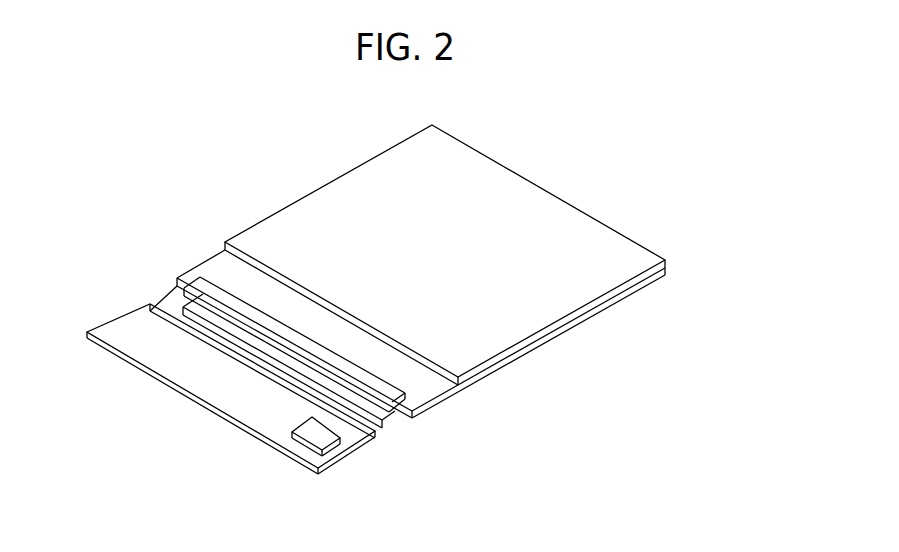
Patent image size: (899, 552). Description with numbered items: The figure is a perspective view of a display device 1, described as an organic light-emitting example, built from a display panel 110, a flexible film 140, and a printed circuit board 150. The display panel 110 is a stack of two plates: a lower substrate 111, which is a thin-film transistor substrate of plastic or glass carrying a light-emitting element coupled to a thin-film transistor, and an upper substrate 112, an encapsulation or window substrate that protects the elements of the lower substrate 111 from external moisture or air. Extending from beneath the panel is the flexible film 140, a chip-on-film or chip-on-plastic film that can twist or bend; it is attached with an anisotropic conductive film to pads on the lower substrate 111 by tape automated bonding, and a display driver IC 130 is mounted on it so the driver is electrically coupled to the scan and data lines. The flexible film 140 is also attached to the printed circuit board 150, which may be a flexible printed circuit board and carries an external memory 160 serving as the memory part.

The display device 1 is at (376, 296).
The display panel 110 is at (445, 275).
The lower substrate 111 is at (663, 365).
The upper substrate 112 is at (592, 308).
The display driver IC 130 is at (390, 406).
The flexible film 140 is at (377, 418).
The printed circuit board 150 is at (348, 455).
The external memory 160 is at (305, 432).